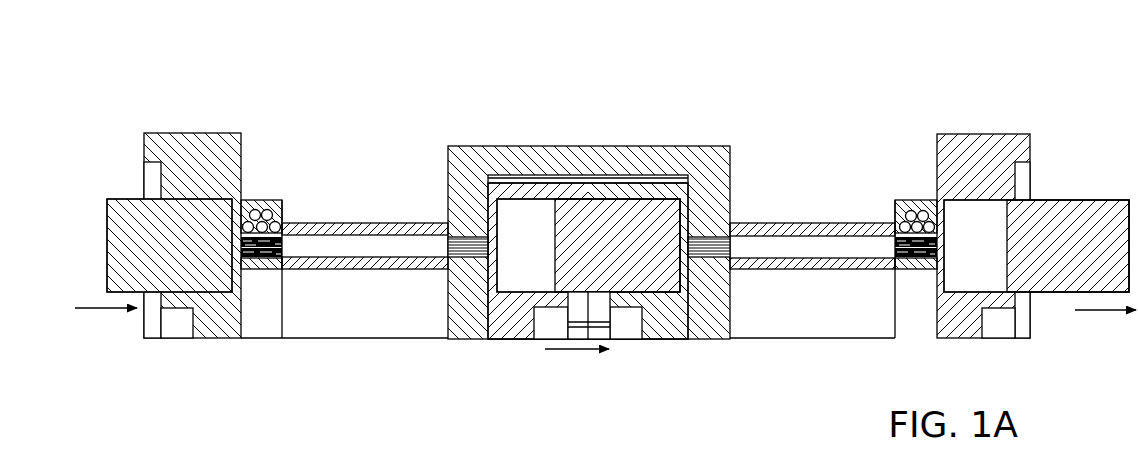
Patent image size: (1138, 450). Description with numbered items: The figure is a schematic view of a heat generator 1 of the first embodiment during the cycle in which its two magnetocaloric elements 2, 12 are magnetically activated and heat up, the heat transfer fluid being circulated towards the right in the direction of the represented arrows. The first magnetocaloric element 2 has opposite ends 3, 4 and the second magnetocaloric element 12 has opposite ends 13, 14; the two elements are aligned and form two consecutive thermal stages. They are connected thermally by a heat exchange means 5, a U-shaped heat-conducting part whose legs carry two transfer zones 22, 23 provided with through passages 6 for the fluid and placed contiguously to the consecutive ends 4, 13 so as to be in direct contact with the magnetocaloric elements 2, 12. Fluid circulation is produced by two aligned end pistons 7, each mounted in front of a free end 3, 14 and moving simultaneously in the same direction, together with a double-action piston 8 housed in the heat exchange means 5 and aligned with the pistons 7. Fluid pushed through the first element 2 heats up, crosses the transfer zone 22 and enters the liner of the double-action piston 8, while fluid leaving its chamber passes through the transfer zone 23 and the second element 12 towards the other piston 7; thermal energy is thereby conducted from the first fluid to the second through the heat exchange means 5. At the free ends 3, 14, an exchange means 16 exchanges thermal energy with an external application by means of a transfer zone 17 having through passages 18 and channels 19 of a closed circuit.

The heat generator 1 is at (60, 128).
The magnetocaloric element 2 is at (334, 243).
The end 3 is at (282, 243).
The end 4 is at (450, 243).
The heat exchange means 5 is at (652, 128).
The through passages 6 is at (503, 187).
The piston 7 is at (133, 215).
The double-action piston 8 is at (566, 218).
The magnetocaloric element 12 is at (810, 243).
The end 13 is at (732, 232).
The end 14 is at (895, 236).
The exchange means 16 is at (268, 293).
The transfer zone 17 is at (252, 247).
The through passages 18 is at (285, 260).
The channels 19 is at (255, 209).
The transfer zone 22 is at (477, 292).
The transfer zone 23 is at (713, 292).